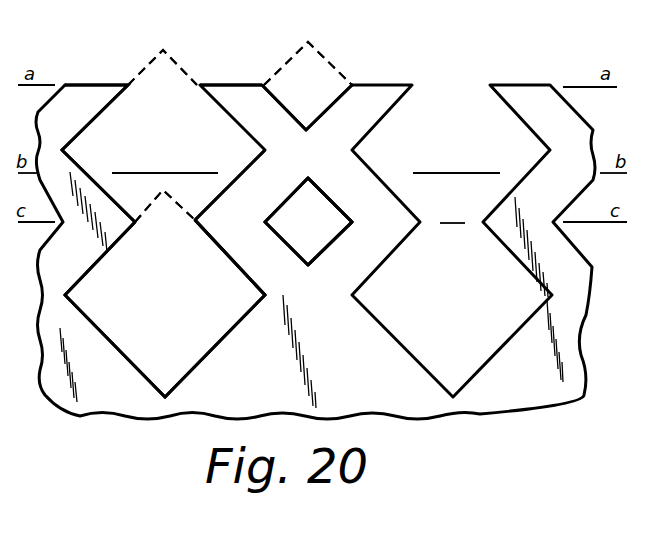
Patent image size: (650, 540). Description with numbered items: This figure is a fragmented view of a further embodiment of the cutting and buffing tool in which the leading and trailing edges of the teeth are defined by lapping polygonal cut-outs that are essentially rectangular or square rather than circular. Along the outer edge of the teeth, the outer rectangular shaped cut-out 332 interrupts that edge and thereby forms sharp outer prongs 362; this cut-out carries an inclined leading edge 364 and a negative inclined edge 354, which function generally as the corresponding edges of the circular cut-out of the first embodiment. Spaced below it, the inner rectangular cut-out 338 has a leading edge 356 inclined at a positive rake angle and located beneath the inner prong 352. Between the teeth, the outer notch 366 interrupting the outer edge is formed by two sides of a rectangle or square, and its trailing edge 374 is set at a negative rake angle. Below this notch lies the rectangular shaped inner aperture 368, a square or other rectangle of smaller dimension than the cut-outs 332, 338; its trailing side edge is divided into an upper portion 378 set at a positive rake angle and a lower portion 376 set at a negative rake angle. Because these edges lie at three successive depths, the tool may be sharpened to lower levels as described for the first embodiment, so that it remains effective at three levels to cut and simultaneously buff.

The outer rectangular shaped cut-out 332 is at (193, 140).
The inner rectangular cut-out 338 is at (188, 334).
The inner prong 352 is at (198, 221).
The negative inclined edge 354 is at (241, 176).
The leading edge 356 is at (224, 252).
The sharp outer prongs 362 is at (202, 84).
The inclined leading edge 364 is at (210, 87).
The outer notch 366 is at (309, 85).
The rectangular shaped inner aperture 368 is at (332, 234).
The trailing edge 374 is at (340, 97).
The lower portion 376 is at (324, 260).
The upper portion 378 is at (321, 191).